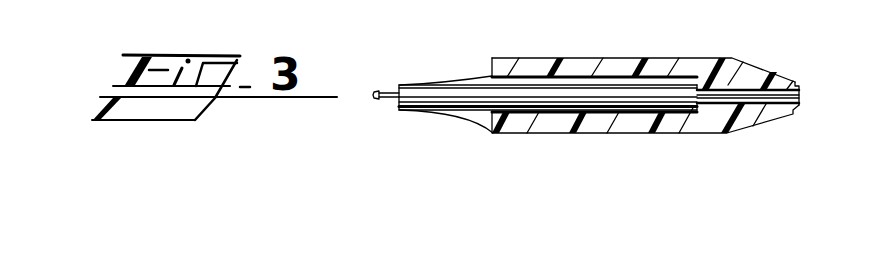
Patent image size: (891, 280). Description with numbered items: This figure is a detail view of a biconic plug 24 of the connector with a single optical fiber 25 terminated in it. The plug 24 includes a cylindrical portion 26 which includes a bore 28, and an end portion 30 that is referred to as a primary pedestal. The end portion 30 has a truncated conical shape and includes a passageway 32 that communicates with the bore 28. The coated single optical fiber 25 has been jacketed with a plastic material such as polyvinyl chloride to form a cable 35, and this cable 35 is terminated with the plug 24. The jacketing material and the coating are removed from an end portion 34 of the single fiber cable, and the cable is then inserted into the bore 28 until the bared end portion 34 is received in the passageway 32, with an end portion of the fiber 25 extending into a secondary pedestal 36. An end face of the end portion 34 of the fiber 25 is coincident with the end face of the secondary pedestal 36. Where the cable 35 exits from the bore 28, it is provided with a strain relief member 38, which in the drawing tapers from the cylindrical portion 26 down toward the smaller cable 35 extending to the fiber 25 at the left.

The plug 24 is at (560, 139).
The optical fiber 25 is at (383, 98).
The cylindrical portion 26 is at (530, 60).
The bore 28 is at (662, 60).
The end portion 30 is at (760, 110).
The passageway 32 is at (763, 106).
The end portion 34 is at (720, 100).
The cable 35 is at (418, 92).
The secondary pedestal 36 is at (799, 85).
The strain relief member 38 is at (470, 76).